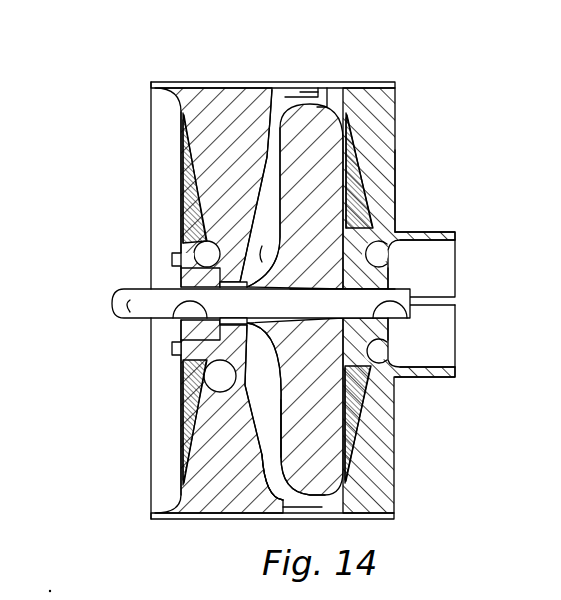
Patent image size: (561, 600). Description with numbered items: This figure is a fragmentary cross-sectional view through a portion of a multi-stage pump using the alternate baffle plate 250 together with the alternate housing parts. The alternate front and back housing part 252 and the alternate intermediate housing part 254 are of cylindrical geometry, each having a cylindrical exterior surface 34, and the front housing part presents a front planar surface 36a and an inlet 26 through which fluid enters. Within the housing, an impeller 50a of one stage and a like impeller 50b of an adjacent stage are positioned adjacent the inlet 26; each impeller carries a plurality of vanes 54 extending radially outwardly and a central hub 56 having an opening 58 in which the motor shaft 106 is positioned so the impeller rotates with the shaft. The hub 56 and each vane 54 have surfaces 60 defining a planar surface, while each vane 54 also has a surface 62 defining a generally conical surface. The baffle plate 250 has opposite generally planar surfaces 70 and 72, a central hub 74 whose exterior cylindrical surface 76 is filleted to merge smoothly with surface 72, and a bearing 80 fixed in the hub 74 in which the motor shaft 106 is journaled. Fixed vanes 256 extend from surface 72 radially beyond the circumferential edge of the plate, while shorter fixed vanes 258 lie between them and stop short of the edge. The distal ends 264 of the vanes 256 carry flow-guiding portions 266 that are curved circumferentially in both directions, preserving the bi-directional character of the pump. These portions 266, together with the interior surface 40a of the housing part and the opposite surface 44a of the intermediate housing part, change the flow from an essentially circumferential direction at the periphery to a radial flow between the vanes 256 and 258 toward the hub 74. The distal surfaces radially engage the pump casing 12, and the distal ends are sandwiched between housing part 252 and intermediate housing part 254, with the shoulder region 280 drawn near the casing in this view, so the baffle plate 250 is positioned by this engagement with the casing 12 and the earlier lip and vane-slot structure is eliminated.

The pump casing 12 is at (165, 82).
The inlet 26 is at (440, 262).
The cylindrical exterior surface 34 is at (210, 515).
The front planar surface 36a is at (397, 218).
The interior surface 40a is at (396, 190).
The opposite surface of intermediate housing part 44a is at (272, 150).
The impeller 50a is at (395, 220).
The impeller 50b is at (194, 240).
The vane 54 is at (190, 185).
The hub 56 is at (377, 281).
The opening 58 is at (408, 320).
The surface 60 is at (188, 418).
The surface 62 is at (186, 398).
The planar surface 70 is at (366, 455).
The planar surface 72 is at (280, 418).
The hub 74 is at (240, 288).
The exterior cylindrical surface 76 is at (267, 244).
The bearing 80 is at (303, 289).
The shaft 106 is at (133, 308).
The alternate baffle plate 250 is at (395, 142).
The front and back housing part 252 is at (457, 333).
The intermediate housing part 254 is at (190, 500).
The fixed vane 256 is at (305, 103).
The fixed vane 258 is at (270, 450).
The distal end 264 is at (279, 104).
The flow-guiding portion 266 is at (310, 87).
The housing shoulder 280 is at (335, 95).